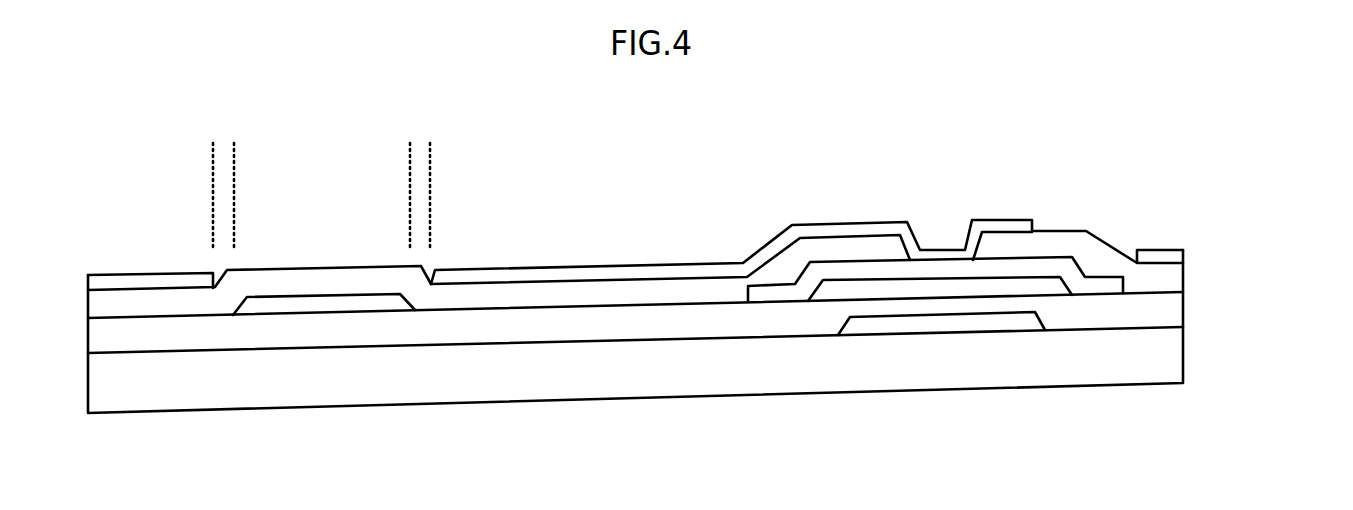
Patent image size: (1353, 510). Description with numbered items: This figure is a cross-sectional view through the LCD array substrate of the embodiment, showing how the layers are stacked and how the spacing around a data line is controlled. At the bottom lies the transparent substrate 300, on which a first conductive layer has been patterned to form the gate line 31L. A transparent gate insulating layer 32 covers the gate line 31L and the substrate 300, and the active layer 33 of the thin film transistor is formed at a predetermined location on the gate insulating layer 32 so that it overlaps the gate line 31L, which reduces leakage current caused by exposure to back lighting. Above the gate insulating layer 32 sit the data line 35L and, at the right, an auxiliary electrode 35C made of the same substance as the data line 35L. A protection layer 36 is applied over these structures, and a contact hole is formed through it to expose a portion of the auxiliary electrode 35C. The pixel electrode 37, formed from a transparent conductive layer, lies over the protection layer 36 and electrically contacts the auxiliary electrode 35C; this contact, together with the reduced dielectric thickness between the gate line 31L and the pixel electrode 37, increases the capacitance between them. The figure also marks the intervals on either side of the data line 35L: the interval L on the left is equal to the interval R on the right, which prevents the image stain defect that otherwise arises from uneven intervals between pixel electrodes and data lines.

The transparent substrate 300 is at (1177, 357).
The gate insulating layer 32 is at (1099, 308).
The gate line 31L is at (925, 326).
The data line 35L is at (288, 300).
The auxiliary electrode 35C is at (1060, 264).
The protection layer 36 is at (1174, 281).
The pixel electrode 37 is at (826, 232).
The active layer 33 is at (1002, 218).
The interval on the left of the data line L is at (262, 163).
The interval on the right of the data line R is at (460, 158).